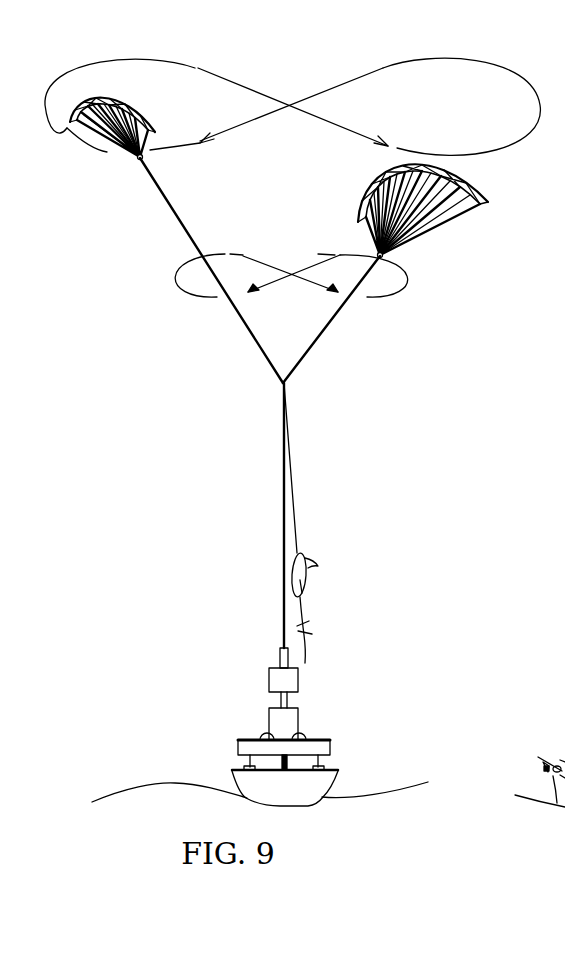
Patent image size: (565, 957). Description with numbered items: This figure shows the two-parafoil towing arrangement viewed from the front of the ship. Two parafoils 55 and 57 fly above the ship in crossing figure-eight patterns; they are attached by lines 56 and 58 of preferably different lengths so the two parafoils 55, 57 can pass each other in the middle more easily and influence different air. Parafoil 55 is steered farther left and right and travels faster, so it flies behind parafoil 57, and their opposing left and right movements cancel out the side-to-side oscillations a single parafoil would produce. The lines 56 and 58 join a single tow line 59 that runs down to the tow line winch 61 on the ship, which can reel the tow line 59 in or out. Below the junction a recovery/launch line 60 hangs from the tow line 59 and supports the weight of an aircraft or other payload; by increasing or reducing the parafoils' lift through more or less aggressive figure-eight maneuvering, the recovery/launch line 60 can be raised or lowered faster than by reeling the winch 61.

The parafoil 55 is at (87, 135).
The tow line 56 is at (180, 222).
The parafoil 57 is at (492, 198).
The tow line 58 is at (323, 333).
The tow line 59 is at (283, 571).
The recovery/launch line 60 is at (291, 453).
The tow line winch 61 is at (564, 750).